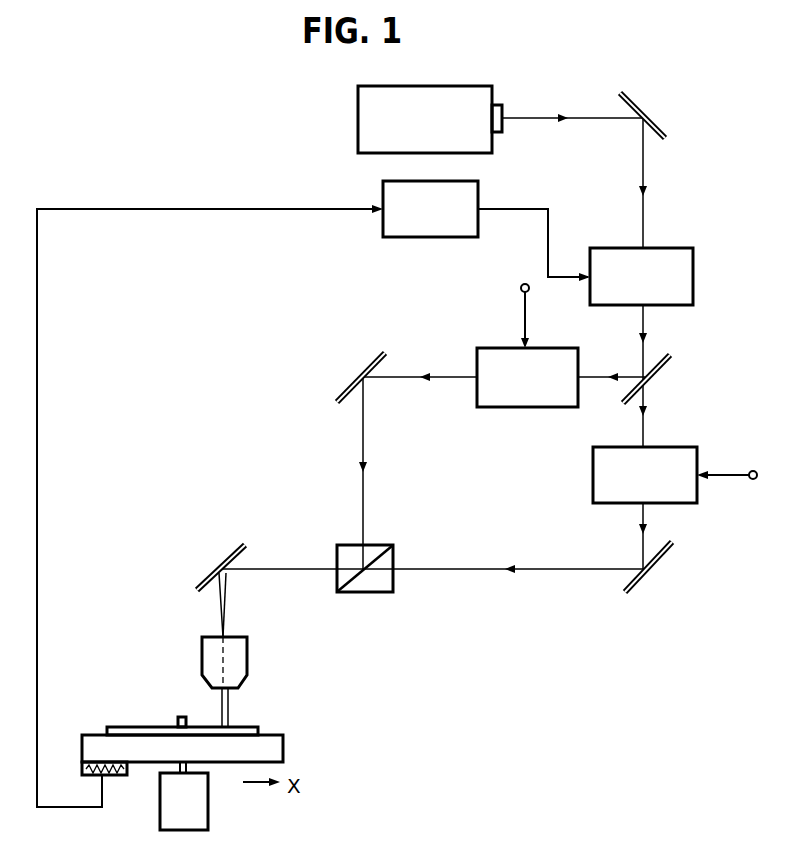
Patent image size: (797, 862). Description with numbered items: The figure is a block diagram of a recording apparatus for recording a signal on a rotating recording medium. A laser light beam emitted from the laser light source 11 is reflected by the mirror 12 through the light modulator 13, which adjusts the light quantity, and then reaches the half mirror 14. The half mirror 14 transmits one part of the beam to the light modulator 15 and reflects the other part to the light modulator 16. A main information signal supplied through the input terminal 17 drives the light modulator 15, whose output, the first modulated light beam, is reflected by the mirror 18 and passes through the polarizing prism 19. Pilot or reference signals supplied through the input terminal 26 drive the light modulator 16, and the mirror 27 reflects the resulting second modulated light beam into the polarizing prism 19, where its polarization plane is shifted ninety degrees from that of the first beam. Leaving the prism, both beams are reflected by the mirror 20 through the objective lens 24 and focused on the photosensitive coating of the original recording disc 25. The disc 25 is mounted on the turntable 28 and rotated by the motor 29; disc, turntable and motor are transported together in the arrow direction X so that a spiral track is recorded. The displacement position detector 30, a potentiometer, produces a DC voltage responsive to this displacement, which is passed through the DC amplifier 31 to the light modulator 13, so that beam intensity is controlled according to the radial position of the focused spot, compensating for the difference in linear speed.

The laser light source 11 is at (386, 86).
The mirror 12 is at (633, 104).
The light modulator 13 is at (667, 248).
The half mirror 14 is at (665, 362).
The light modulator 15 is at (603, 447).
The light modulator 16 is at (492, 348).
The input terminal 17 is at (751, 471).
The mirror 18 is at (662, 556).
The polarizing prism 19 is at (360, 592).
The mirror 20 is at (228, 552).
The objective lens 24 is at (208, 637).
The original recording disc 25 is at (143, 727).
The input terminal 26 is at (521, 288).
The mirror 27 is at (370, 365).
The turntable 28 is at (272, 735).
The motor 29 is at (208, 805).
The displacement position detector 30 is at (118, 775).
The DC amplifier 31 is at (478, 192).